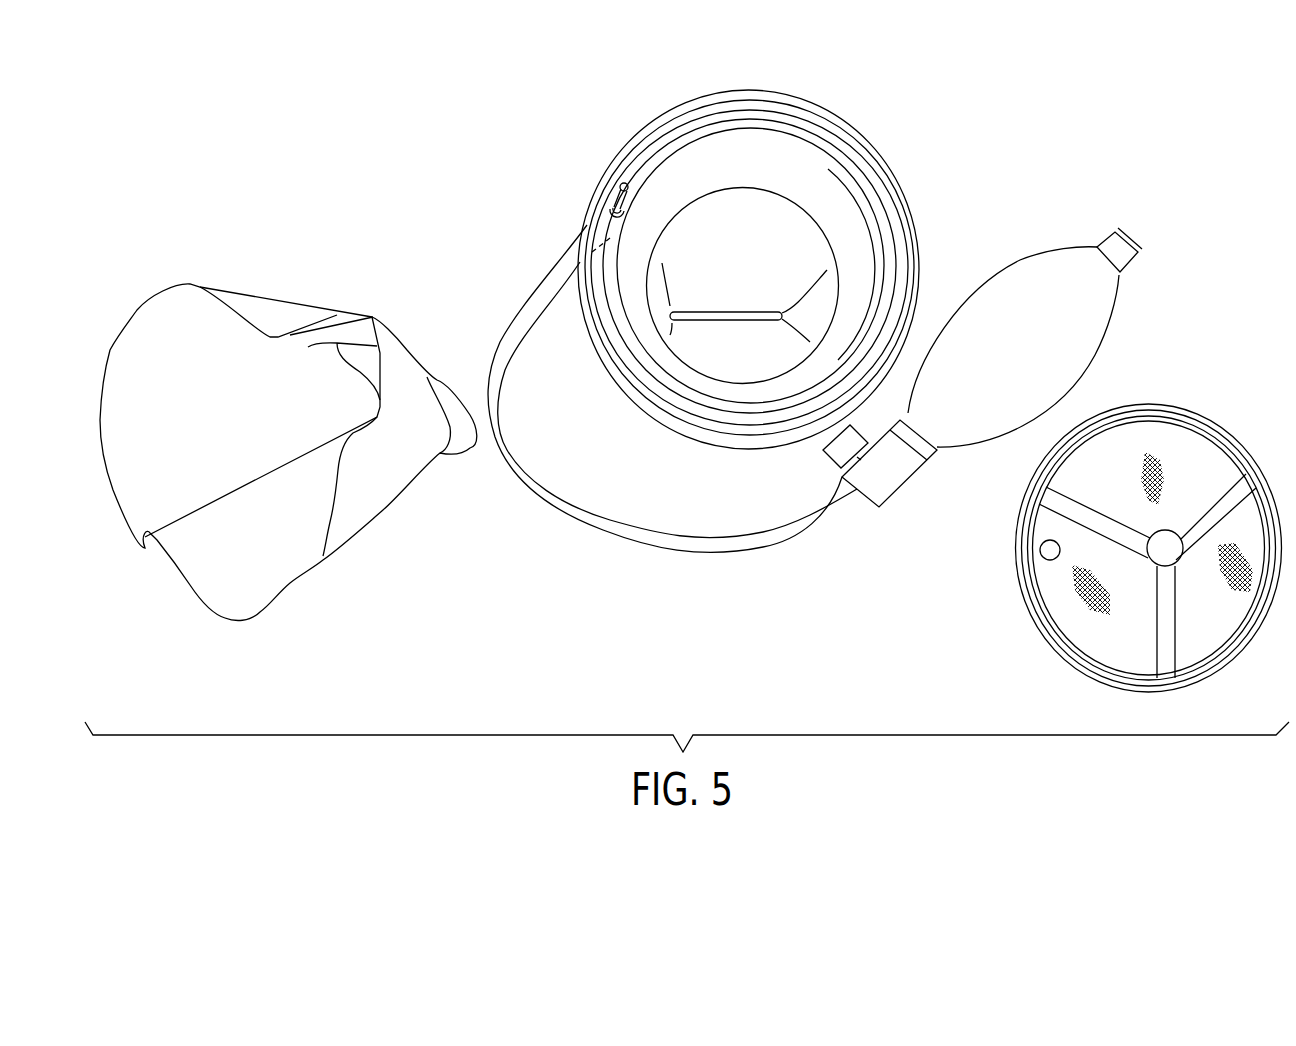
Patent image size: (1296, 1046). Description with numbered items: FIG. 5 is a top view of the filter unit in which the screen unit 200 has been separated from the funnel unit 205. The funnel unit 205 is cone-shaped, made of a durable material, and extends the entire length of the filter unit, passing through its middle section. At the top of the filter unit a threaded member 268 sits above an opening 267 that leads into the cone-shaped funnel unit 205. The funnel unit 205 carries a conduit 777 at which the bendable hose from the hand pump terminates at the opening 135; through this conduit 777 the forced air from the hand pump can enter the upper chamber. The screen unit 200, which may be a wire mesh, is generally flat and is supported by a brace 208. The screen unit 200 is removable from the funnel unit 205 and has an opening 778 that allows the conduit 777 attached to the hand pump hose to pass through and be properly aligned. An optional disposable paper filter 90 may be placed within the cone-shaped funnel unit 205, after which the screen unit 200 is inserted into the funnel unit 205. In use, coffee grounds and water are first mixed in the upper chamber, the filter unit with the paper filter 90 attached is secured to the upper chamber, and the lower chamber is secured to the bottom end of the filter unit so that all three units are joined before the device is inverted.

The disposable paper filter 90 is at (250, 315).
The funnel unit 205 is at (745, 269).
The conduit 777 is at (616, 196).
The opening 135 is at (611, 219).
The opening 267 is at (857, 182).
The threaded member 268 is at (898, 270).
The opening 778 is at (1043, 561).
The screen unit 200 is at (1117, 567).
The brace 208 is at (1165, 668).